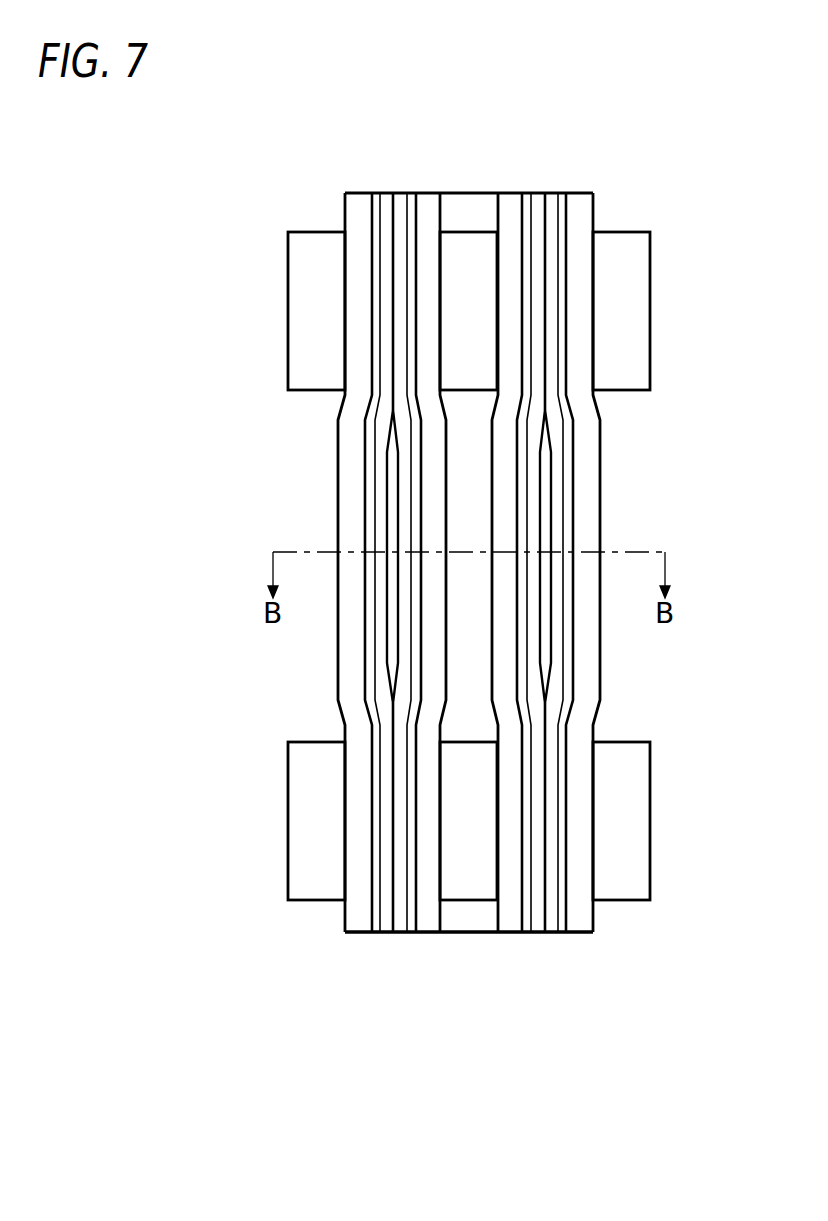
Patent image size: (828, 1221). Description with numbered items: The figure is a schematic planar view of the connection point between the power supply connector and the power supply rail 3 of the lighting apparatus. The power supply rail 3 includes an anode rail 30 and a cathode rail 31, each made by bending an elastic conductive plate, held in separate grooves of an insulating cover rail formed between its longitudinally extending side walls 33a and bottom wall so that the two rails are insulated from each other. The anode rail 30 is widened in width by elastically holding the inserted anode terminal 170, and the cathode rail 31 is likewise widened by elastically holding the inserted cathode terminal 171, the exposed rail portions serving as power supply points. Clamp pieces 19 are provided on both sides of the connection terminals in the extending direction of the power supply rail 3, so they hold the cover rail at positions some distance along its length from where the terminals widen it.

The power supply rail 3 is at (583, 207).
The clamp pieces 19 is at (620, 330).
The anode rail 30 is at (333, 555).
The cathode rail 31 is at (607, 555).
The anode terminal 170 is at (397, 517).
The cathode terminal 171 is at (541, 517).
The side walls 33a is at (358, 920).